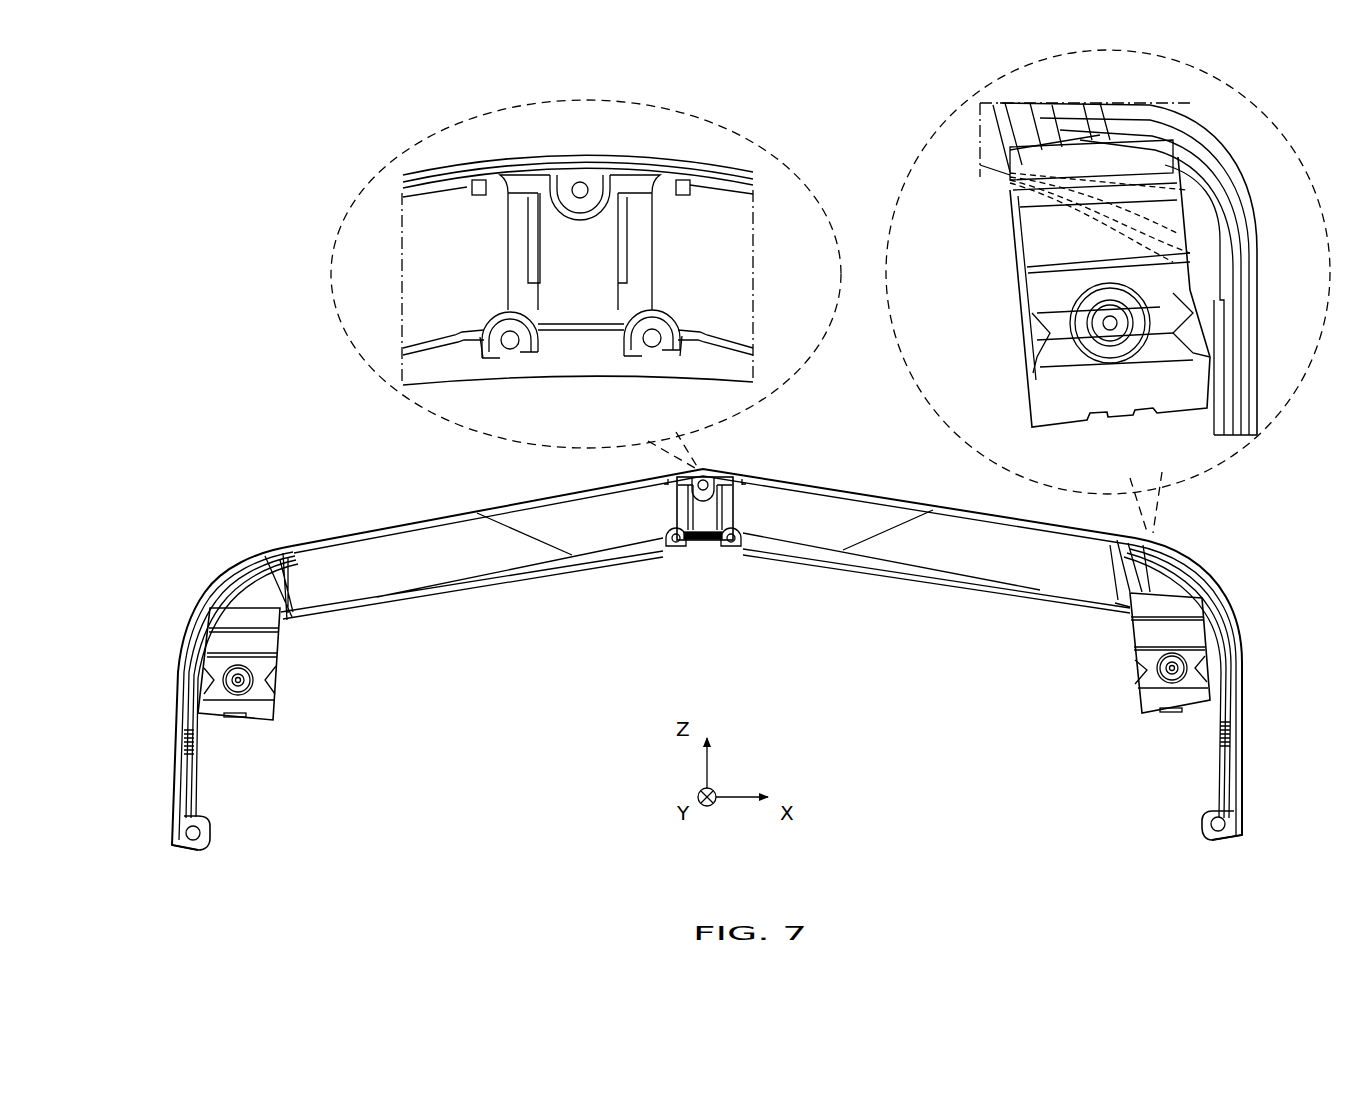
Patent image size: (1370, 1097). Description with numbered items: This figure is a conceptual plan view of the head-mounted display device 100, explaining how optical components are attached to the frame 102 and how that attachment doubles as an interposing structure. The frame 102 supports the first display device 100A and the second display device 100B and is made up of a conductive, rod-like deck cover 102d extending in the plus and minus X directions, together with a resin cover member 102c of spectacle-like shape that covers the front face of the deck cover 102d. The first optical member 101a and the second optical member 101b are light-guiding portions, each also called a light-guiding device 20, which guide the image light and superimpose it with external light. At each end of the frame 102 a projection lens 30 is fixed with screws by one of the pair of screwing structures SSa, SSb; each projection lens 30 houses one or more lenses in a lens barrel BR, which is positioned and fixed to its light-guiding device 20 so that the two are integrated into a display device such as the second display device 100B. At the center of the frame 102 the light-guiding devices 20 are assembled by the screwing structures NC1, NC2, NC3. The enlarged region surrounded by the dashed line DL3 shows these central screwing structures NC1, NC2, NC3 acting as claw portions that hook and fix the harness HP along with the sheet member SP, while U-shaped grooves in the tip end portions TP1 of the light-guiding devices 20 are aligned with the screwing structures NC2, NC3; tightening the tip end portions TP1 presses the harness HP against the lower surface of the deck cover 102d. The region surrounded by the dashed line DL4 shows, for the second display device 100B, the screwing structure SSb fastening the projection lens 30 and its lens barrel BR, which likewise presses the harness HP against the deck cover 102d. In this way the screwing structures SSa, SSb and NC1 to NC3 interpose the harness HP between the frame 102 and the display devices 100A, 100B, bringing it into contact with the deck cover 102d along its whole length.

The head-mounted display device 100 is at (268, 428).
The first display device 100A is at (370, 503).
The second display device 100B is at (920, 490).
The frame 102 is at (708, 542).
The cover member 102c is at (462, 512).
The deck cover 102d is at (700, 546).
The light-guiding device 20 is at (640, 614).
The first optical member 101a is at (440, 565).
The second optical member 101b is at (866, 548).
The projection lens 30 is at (266, 718).
The lens barrel BR is at (265, 654).
The screwing structure SSa is at (292, 695).
The screwing structure SSb is at (1127, 678).
The sheet member SP is at (716, 525).
The harness HP is at (783, 266).
The screwing structure NC1 is at (704, 473).
The screwing structure NC2 is at (673, 547).
The screwing structure NC3 is at (730, 547).
The tip end portion TP1 is at (482, 345).
The dashed line DL3 is at (355, 200).
The dashed line DL4 is at (920, 140).